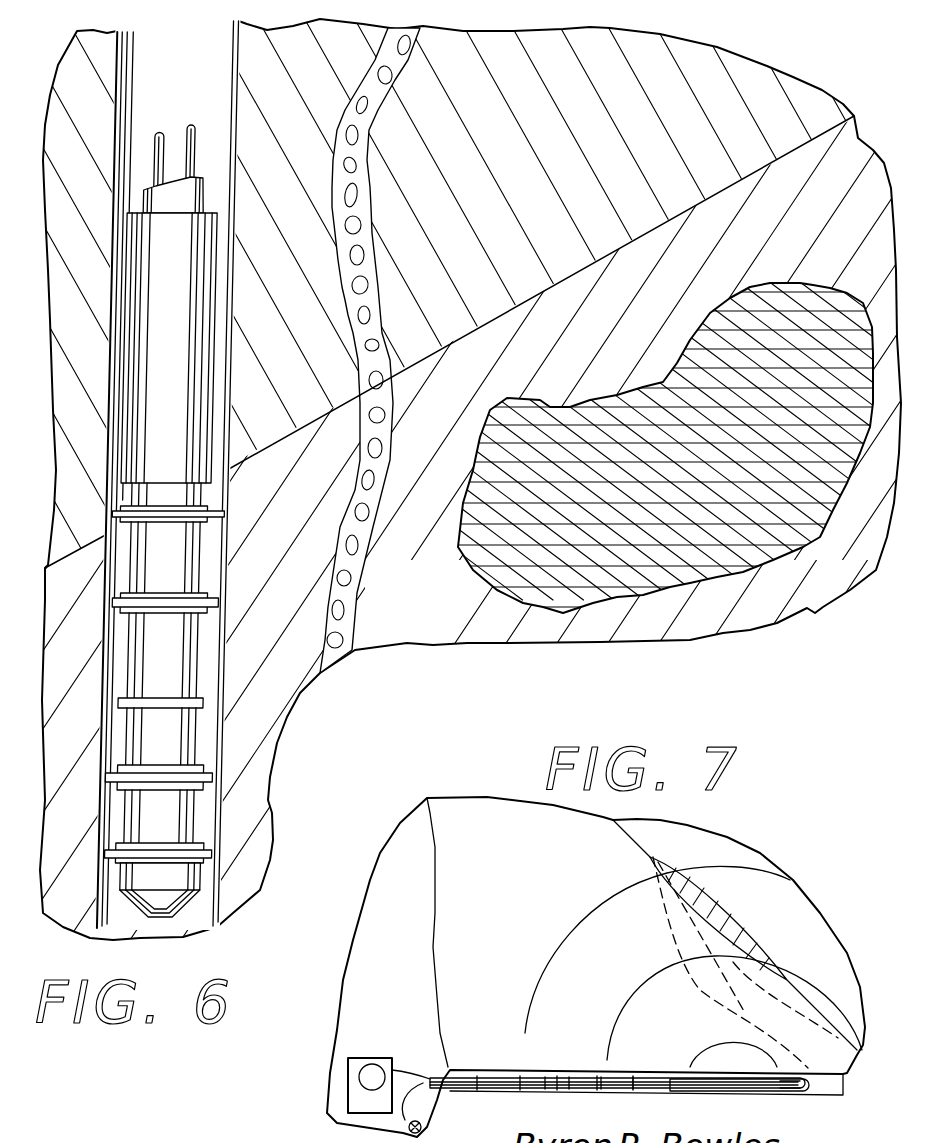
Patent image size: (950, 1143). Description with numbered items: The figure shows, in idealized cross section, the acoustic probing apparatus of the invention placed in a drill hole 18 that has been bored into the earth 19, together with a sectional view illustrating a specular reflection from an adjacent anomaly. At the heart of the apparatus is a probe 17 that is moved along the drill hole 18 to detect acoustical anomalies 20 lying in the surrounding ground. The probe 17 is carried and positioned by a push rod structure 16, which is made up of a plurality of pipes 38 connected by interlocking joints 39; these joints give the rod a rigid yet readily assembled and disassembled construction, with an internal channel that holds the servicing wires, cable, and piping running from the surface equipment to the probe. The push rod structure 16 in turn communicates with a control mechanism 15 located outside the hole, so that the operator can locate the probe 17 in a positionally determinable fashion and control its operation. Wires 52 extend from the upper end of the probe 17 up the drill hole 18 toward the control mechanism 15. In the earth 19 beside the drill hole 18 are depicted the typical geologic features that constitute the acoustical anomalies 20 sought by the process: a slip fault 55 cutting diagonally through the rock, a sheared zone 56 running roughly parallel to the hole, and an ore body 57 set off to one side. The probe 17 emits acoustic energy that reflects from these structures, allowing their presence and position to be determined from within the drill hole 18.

In FIG. 7, the control mechanism 15 is at (382, 1057).
In FIG. 6, the push rod structure 16 is at (200, 177).
In FIG. 7, the push rod structure 16 is at (531, 1080).
In FIG. 6, the probe 17 is at (108, 370).
In FIG. 7, the probe 17 is at (751, 1091).
In FIG. 6, the drill hole 18 is at (205, 115).
In FIG. 7, the drill hole 18 is at (589, 1091).
In FIG. 6, the earth 19 is at (280, 676).
In FIG. 7, the earth 19 is at (462, 909).
In FIG. 6, the acoustical anomalies 20 is at (465, 343).
In FIG. 7, the acoustical anomalies 20 is at (757, 936).
In FIG. 7, the pipes 38 is at (568, 1080).
In FIG. 7, the interlocking joints 39 is at (633, 1081).
In FIG. 6, the conductor cables 52 is at (187, 127).
In FIG. 6, the slip fault 55 is at (547, 285).
In FIG. 6, the sheared zone 56 is at (358, 346).
In FIG. 6, the ore body 57 is at (643, 412).